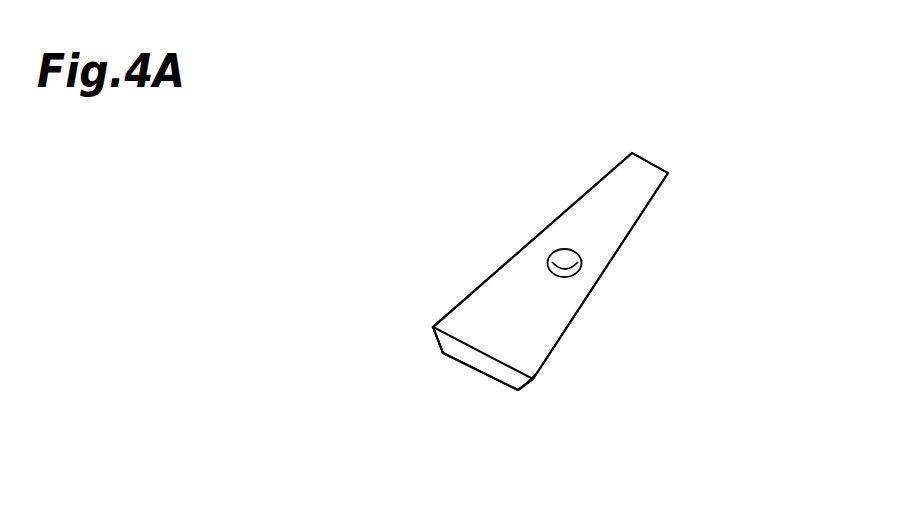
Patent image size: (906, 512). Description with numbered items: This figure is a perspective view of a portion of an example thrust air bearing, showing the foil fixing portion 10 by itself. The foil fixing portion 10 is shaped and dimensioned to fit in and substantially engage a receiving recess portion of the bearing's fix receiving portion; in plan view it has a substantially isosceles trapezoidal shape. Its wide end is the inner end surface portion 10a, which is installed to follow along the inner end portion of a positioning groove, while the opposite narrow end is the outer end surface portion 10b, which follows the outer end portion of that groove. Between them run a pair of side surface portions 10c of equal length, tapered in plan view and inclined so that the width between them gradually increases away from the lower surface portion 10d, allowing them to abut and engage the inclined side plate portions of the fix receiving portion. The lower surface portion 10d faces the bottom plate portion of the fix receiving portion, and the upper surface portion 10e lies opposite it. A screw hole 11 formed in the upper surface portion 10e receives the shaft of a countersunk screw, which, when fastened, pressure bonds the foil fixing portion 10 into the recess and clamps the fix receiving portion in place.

The foil fixing portion 10 is at (604, 174).
The inner end surface portion 10a is at (648, 160).
The outer end surface portion 10b is at (472, 363).
The side surface portions 10c is at (517, 253).
The lower surface portion 10d is at (497, 383).
The upper surface portion 10e is at (458, 325).
The screw hole 11 is at (565, 249).